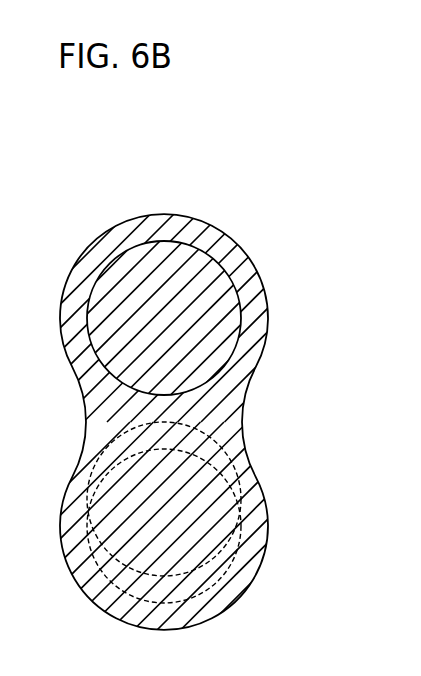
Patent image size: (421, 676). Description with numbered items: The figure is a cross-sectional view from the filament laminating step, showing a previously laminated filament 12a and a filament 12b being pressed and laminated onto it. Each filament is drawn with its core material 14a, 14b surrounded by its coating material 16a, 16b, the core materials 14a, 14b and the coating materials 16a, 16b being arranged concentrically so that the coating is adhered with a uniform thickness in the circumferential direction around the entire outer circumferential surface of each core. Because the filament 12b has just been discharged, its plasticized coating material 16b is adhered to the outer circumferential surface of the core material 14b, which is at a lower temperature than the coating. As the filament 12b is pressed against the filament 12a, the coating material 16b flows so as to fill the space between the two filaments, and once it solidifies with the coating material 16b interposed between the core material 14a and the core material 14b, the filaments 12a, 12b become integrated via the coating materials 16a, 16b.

The filament 12a is at (210, 536).
The filament 12b is at (210, 311).
The core material 14a is at (217, 512).
The core material 14b is at (213, 306).
The coating material 16a is at (248, 555).
The coating material 16b is at (252, 347).